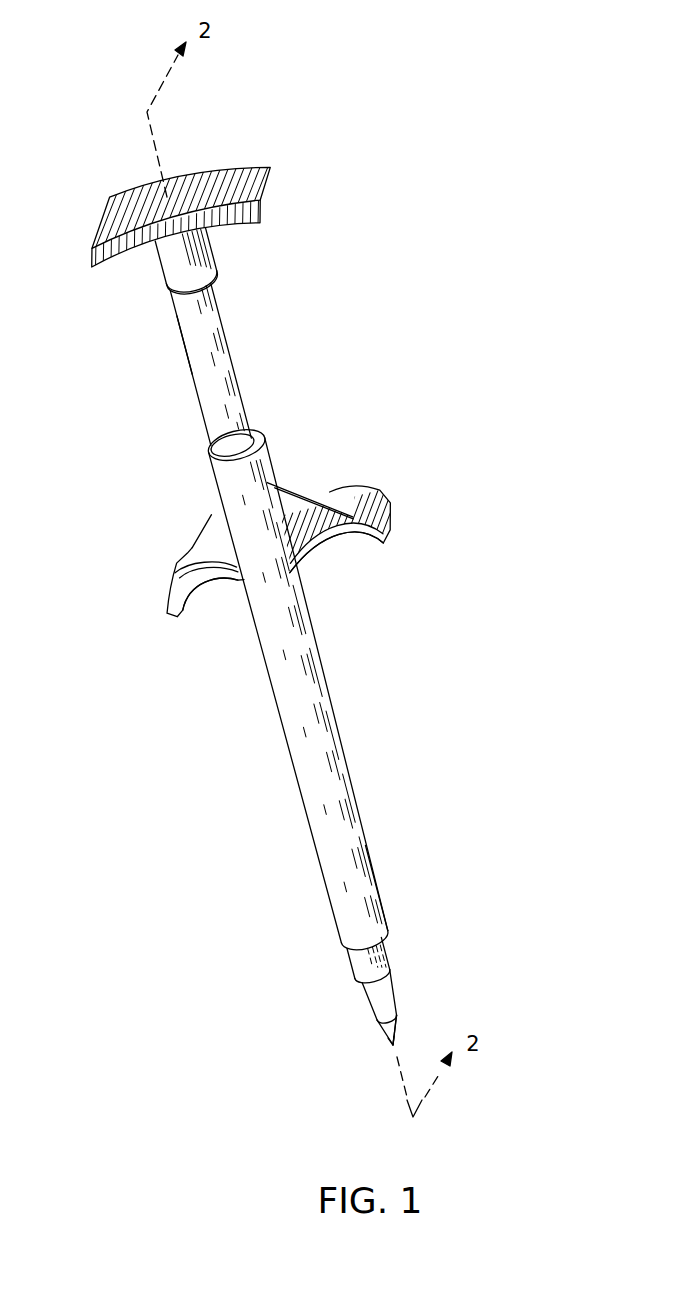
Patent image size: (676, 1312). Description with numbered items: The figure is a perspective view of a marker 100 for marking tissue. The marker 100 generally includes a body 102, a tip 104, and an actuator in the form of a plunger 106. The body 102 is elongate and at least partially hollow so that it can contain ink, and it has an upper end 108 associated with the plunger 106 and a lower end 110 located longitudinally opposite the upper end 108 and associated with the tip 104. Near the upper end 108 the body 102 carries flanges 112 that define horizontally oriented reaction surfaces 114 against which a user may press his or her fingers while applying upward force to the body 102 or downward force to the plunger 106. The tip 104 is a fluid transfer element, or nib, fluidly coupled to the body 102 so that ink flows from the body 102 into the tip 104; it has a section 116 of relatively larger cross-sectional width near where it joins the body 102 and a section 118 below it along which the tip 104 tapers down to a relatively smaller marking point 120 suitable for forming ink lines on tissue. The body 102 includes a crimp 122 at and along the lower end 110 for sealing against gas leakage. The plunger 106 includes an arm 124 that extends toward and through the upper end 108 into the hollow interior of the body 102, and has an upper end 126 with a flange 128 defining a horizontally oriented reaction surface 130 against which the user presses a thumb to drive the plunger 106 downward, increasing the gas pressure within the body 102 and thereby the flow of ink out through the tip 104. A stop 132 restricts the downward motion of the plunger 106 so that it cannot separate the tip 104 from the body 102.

The marker 100 is at (175, 367).
The body 102 is at (332, 635).
The tip 104 is at (407, 1015).
The plunger 106 is at (237, 350).
The upper end 108 is at (272, 443).
The lower end 110 is at (393, 893).
The flanges 112 is at (388, 508).
The reaction surfaces 114 is at (342, 548).
The section 116 is at (363, 1020).
The section 118 is at (403, 1043).
The marking point 120 is at (393, 1053).
The crimp 122 is at (360, 962).
The arm 124 is at (207, 398).
The upper end 126 is at (223, 287).
The flange 128 is at (270, 197).
The reaction surface 130 is at (213, 187).
The stop 132 is at (163, 293).